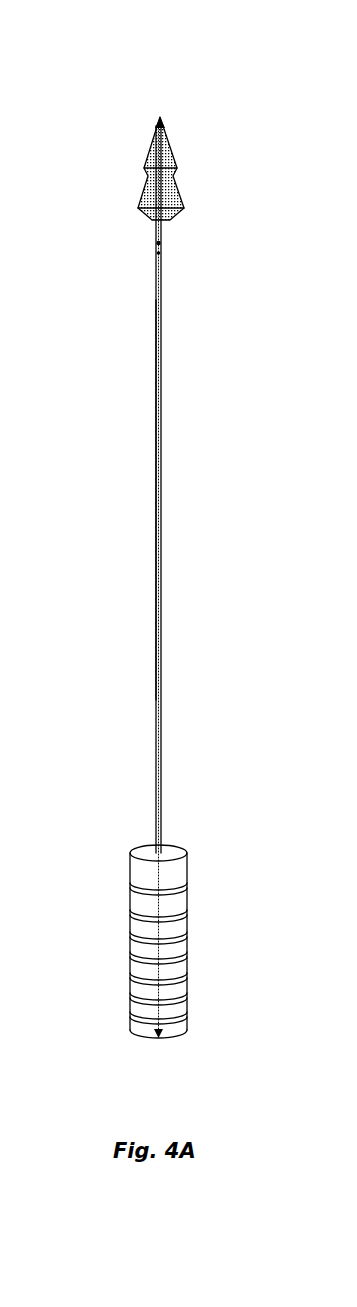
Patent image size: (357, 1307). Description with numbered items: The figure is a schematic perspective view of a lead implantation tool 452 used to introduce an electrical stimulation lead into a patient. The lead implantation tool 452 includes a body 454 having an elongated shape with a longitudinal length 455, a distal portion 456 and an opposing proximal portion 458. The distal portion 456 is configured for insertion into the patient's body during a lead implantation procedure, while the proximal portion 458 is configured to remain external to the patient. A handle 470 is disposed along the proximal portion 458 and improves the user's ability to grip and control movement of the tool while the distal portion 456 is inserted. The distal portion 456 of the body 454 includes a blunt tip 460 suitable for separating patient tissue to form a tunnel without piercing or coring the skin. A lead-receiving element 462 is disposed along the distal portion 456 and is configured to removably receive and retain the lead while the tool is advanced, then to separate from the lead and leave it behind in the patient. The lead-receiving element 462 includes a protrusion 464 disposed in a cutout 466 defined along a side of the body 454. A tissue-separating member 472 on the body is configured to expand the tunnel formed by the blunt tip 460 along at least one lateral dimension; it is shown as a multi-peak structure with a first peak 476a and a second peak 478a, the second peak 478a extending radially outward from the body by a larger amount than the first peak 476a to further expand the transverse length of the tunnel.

The lead implantation tool 452 is at (94, 73).
The body 454 is at (155, 509).
The longitudinal length 455 is at (167, 435).
The distal portion 456 is at (218, 129).
The proximal portion 458 is at (219, 764).
The blunt tip 460 is at (158, 118).
The lead-receiving element 462 is at (182, 248).
The protrusion 464 is at (156, 253).
The cutout 466 is at (156, 243).
The handle 470 is at (142, 898).
The tissue-separating member 472 is at (200, 187).
The first peak 476a is at (148, 167).
The second peak 478a is at (140, 205).